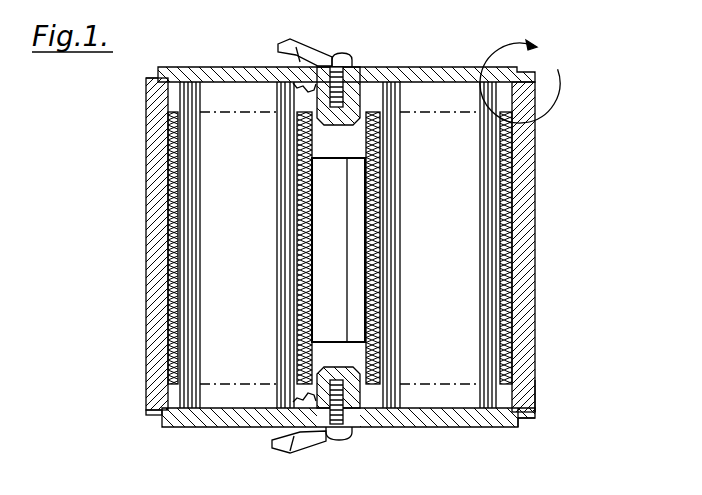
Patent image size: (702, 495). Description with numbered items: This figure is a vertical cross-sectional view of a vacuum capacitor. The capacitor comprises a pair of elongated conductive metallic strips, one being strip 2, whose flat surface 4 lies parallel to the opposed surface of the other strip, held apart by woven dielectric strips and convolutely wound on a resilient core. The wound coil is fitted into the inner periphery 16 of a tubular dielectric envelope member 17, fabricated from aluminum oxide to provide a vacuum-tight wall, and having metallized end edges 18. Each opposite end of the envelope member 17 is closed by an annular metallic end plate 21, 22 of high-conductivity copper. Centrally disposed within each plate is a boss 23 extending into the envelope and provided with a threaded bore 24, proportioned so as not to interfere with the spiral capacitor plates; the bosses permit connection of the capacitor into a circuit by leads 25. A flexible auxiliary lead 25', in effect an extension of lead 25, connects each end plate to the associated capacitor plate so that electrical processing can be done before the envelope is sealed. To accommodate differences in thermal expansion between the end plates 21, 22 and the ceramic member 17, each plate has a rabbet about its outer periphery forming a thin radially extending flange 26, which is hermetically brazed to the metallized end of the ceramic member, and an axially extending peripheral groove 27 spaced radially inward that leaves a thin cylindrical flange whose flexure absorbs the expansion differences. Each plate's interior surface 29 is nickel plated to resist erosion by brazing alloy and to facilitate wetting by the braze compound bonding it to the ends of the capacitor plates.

The conductive metallic strip 2 is at (129, 172).
The flat surface 4 is at (520, 81).
The inner periphery 16 is at (512, 268).
The tubular dielectric envelope member 17 is at (523, 300).
The metallized end edges 18 is at (538, 402).
The annular metallic end plate 21 is at (441, 72).
The annular metallic end plate 22 is at (433, 421).
The boss 23 is at (373, 79).
The threaded bore 24 is at (337, 54).
The lead 25 is at (290, 249).
The flexible auxiliary lead 25' is at (274, 225).
The radially extending flange 26 is at (530, 419).
The axially extending peripheral groove 27 is at (505, 419).
The interior surface 29 is at (228, 83).